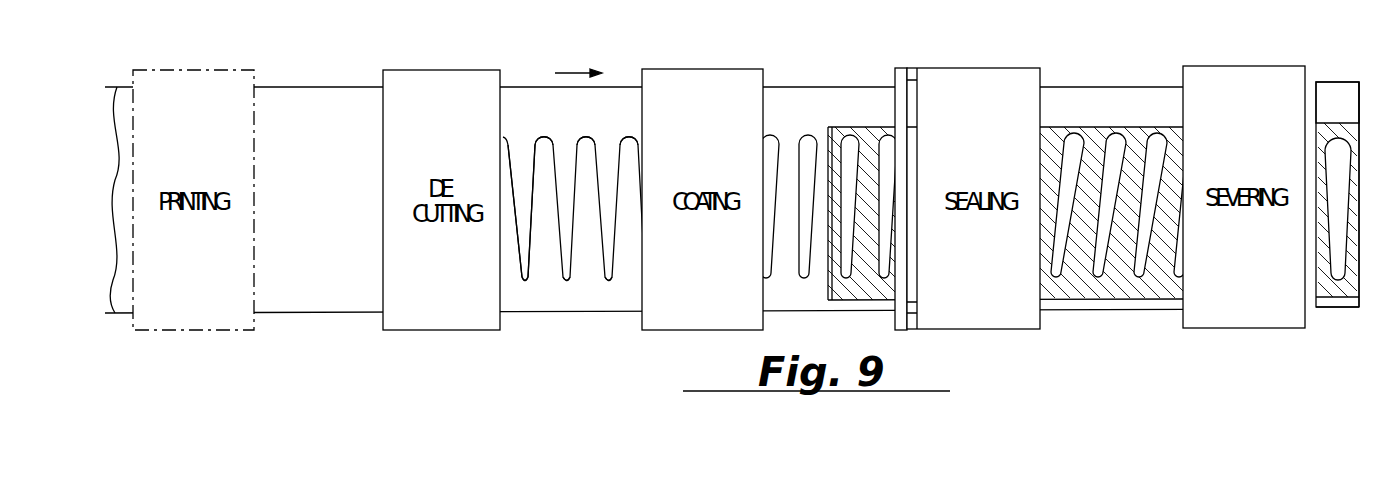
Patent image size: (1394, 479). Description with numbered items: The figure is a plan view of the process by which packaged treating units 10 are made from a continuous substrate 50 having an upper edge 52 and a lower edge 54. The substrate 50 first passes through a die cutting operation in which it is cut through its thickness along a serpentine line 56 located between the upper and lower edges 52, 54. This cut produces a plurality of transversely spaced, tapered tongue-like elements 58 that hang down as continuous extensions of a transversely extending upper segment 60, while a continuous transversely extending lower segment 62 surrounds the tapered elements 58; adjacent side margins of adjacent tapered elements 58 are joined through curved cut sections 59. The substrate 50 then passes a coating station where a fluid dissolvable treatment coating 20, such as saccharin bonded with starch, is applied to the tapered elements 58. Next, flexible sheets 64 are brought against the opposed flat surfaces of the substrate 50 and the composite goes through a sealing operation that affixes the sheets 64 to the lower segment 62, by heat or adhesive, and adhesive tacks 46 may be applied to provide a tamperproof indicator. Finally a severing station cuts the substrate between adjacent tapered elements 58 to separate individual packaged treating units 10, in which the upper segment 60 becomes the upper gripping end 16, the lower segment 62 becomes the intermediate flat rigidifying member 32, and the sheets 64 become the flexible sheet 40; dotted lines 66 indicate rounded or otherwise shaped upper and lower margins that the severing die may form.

The packaged treating unit 10 is at (1351, 197).
The upper gripping end 16 is at (1326, 98).
The fluid dissolvable treatment coating 20 is at (786, 170).
The intermediate flat rigidifying member 32 is at (1336, 308).
The flexible sheet 40 is at (1353, 199).
The adhesive tacks 46 is at (1086, 125).
The substrate 50 is at (117, 80).
The upper edge 52 is at (297, 87).
The lower edge 54 is at (328, 313).
The serpentine cut line 56 is at (533, 144).
The tapered tongue-like elements 58 is at (525, 284).
The curved cut sections 59 is at (627, 143).
The transversely extending upper segment 60 is at (550, 92).
The transversely extending lower segment 62 is at (543, 265).
The flexible sheets 64 is at (838, 127).
The dotted lines 66 is at (1348, 82).